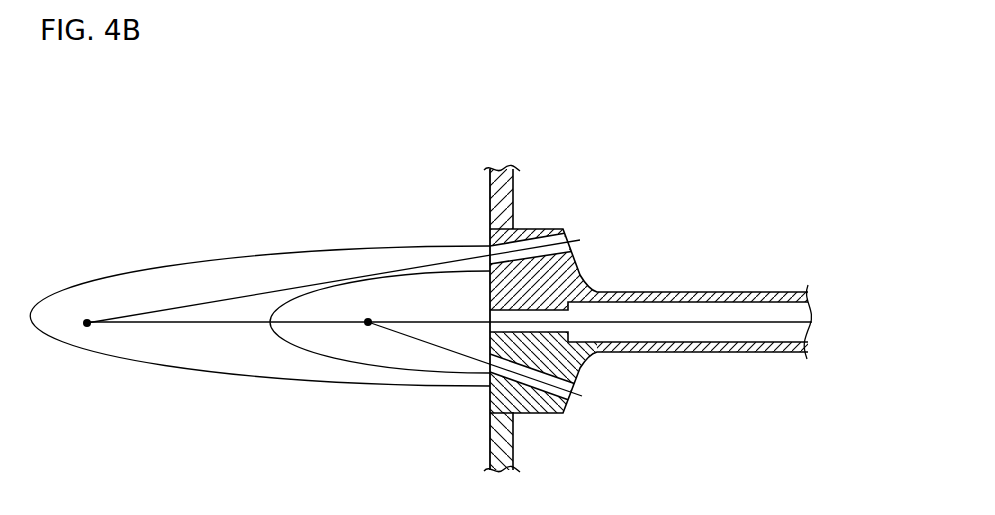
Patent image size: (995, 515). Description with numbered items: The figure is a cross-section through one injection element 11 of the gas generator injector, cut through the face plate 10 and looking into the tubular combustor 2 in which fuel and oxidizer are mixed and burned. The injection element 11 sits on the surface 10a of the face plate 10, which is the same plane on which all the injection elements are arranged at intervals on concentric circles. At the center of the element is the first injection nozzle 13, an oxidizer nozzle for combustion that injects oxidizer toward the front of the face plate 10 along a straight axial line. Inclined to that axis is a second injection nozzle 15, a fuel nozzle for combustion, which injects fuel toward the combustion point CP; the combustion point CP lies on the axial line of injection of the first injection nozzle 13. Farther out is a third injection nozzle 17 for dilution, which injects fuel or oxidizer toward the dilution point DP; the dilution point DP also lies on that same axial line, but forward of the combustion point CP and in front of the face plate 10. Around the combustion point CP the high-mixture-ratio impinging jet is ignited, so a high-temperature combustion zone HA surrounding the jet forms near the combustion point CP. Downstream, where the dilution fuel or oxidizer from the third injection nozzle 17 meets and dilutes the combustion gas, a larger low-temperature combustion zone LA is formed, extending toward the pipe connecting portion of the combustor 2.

The combustor 2 is at (217, 197).
The face plate 10 is at (490, 180).
The surface 10a is at (490, 208).
The injection element 11 is at (482, 401).
The first injection nozzle 13 is at (490, 313).
The second injection nozzle 15 is at (483, 375).
The third injection nozzle 17 is at (488, 252).
The dilution point DP is at (87, 327).
The combustion point CP is at (367, 326).
The low-temperature combustion zone LA is at (177, 365).
The high-temperature combustion zone HA is at (278, 336).